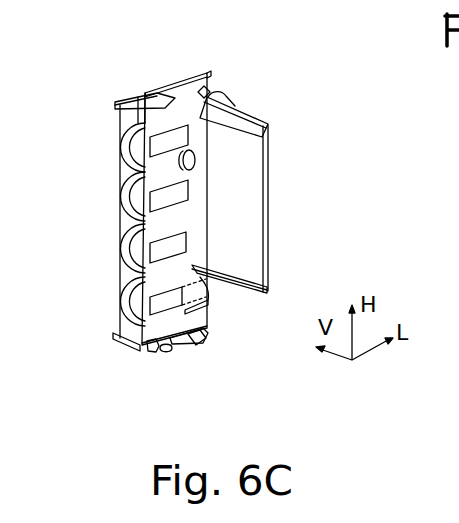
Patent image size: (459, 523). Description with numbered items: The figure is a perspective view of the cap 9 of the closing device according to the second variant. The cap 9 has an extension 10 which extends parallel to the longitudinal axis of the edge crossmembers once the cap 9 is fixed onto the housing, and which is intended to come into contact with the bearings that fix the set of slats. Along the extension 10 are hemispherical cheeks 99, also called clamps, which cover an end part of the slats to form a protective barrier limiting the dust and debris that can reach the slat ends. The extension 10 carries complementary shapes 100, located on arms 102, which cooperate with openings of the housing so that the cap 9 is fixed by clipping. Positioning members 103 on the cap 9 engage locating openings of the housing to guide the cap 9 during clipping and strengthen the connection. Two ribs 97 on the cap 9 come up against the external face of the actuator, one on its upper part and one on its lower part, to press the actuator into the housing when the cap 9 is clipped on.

The cap 9 is at (272, 198).
The extension 10 is at (150, 198).
The rib 97 is at (238, 110).
The hemispherical cheek 99 is at (121, 260).
The complementary shape 100 is at (212, 90).
The arm 102 is at (160, 88).
The positioning member 103 is at (272, 126).